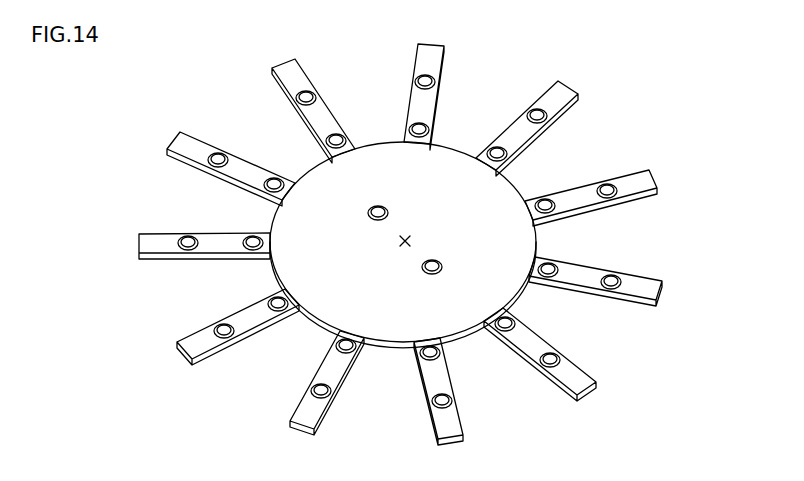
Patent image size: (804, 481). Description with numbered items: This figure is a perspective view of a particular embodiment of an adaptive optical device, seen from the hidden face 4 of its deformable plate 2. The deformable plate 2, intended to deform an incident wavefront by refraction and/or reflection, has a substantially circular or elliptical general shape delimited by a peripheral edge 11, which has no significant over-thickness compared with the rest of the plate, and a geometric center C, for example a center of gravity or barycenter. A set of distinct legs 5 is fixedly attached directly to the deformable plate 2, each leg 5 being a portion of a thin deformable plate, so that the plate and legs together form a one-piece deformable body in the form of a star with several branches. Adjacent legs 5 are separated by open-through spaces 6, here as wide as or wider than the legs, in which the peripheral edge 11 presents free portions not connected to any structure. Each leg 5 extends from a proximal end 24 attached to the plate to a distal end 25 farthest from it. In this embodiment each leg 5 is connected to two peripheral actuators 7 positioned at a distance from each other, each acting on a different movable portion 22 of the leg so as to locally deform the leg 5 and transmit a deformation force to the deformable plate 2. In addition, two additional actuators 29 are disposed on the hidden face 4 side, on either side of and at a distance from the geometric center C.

The deformable plate 2 is at (492, 210).
The hidden face 4 is at (482, 255).
The leg 5 is at (439, 90).
The space 6 is at (352, 68).
The peripheral actuator 7 is at (429, 76).
The peripheral edge 11 is at (539, 246).
The movable portion 22 is at (408, 80).
The proximal end 24 is at (437, 133).
The distal end 25 is at (426, 44).
The additional actuator 29 is at (368, 214).
The geometric center C is at (404, 238).